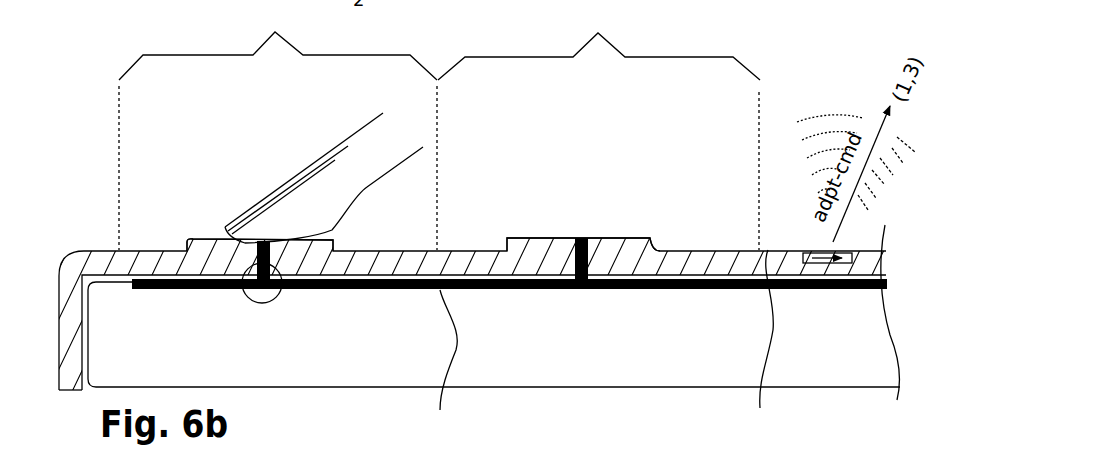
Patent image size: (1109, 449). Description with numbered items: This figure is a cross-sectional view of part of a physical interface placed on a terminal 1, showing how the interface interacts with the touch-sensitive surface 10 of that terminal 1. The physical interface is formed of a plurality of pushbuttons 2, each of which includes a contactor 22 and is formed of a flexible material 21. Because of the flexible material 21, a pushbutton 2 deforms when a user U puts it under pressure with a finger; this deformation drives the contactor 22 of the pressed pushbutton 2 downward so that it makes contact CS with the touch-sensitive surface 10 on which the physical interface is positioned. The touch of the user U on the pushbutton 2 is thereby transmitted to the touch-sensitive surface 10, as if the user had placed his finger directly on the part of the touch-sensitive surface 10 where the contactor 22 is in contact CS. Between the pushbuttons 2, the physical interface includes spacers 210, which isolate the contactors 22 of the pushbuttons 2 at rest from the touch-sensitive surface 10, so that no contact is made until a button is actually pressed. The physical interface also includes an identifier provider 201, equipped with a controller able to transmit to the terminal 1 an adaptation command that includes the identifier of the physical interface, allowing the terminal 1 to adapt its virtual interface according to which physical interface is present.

The terminal 1 is at (846, 347).
The touch-sensitive surface 10 is at (897, 283).
The identifier provider 201 is at (884, 253).
The pushbutton 2 is at (460, 200).
The flexible material 21 is at (118, 262).
The contactor 22 is at (253, 258).
The spacer 210 is at (611, 346).
The contact CS is at (262, 303).
The user U is at (337, 172).